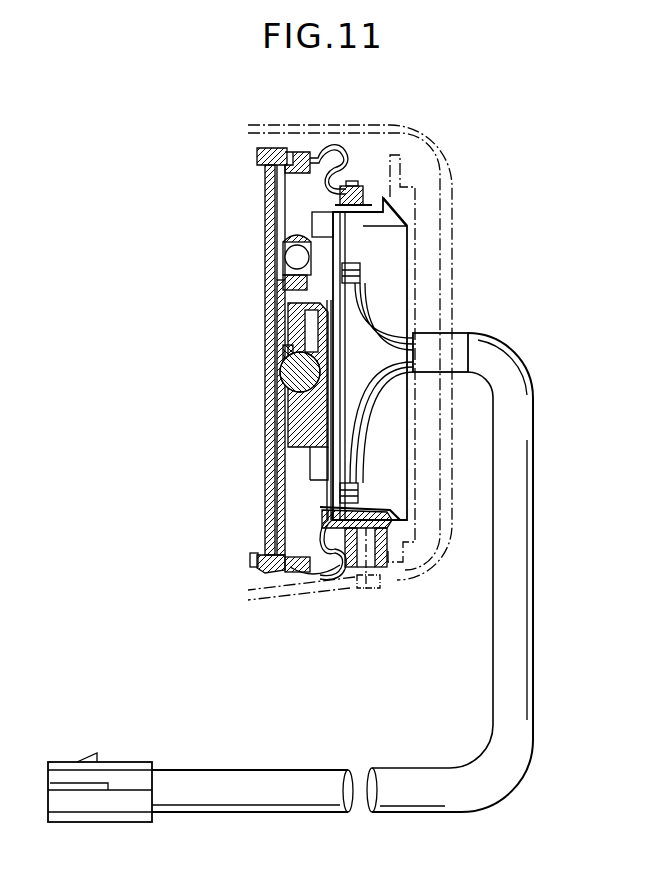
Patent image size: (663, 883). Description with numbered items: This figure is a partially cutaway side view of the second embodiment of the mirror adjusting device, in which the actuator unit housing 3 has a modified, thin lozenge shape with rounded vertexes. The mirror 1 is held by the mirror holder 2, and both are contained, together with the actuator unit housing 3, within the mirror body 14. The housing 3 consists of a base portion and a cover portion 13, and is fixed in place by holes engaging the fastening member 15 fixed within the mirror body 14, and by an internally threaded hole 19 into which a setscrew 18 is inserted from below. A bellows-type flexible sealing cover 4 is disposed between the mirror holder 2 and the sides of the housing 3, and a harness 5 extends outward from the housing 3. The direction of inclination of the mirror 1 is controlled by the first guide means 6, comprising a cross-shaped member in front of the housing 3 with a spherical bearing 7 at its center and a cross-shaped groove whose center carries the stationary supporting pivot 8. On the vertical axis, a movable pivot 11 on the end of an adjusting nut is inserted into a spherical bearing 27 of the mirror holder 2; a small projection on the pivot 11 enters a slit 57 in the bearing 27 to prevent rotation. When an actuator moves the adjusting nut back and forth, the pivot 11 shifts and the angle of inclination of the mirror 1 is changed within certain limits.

The mirror 1 is at (264, 474).
The mirror holder 2 is at (284, 528).
The actuator unit housing 3 is at (418, 283).
The flexible sealing cover 4 is at (332, 150).
The harness 5 is at (517, 468).
The first guide means 6 is at (266, 410).
The spherical bearing 7 is at (290, 355).
The stationary supporting pivot 8 is at (290, 372).
The movable pivot 11 is at (288, 258).
The cover portion 13 is at (331, 528).
The mirror body 14 is at (396, 129).
The fastening member 15 is at (414, 210).
The setscrew 18 is at (368, 585).
The internally threaded hole 19 is at (383, 565).
The spherical bearing 27 is at (274, 287).
The slit 57 is at (273, 236).